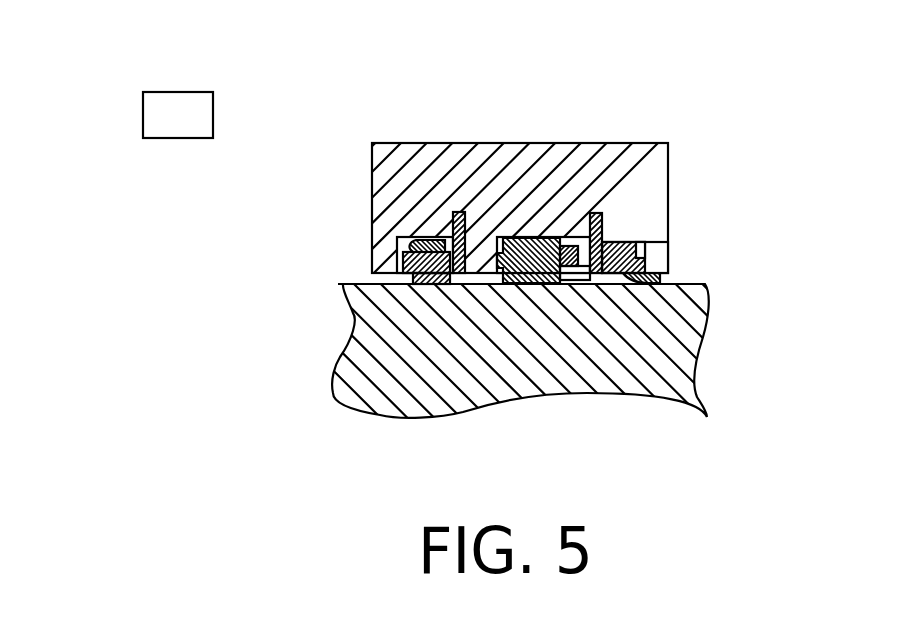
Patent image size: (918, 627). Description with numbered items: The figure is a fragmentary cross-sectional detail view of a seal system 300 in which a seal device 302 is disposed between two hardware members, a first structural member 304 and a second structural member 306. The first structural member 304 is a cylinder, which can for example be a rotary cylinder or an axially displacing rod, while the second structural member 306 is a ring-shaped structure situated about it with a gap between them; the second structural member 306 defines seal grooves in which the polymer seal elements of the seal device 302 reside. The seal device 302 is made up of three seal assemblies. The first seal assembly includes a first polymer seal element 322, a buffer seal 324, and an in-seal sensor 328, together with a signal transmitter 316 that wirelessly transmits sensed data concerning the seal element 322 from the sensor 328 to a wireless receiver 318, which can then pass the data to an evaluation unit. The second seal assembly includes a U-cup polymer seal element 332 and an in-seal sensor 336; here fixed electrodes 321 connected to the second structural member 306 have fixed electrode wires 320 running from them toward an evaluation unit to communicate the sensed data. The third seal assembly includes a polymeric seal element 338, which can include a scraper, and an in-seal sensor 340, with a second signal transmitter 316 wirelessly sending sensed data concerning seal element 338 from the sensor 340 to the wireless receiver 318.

The seal system 300 is at (120, 78).
The seal device 302 is at (338, 180).
The first structural member 304 is at (708, 333).
The second structural member 306 is at (668, 175).
The signal transmitter 316 is at (457, 213).
The wireless receiver 318 is at (203, 128).
The fixed electrode wires 320 is at (584, 272).
The fixed electrodes 321 is at (578, 280).
The first polymer seal element 322 is at (413, 268).
The buffer seal 324 is at (407, 245).
The in-seal sensor 328 is at (446, 252).
The U-cup polymer seal element 332 is at (535, 283).
The in-seal sensor 336 is at (553, 240).
The seal element 338 is at (663, 278).
The in-seal sensor 340 is at (668, 248).